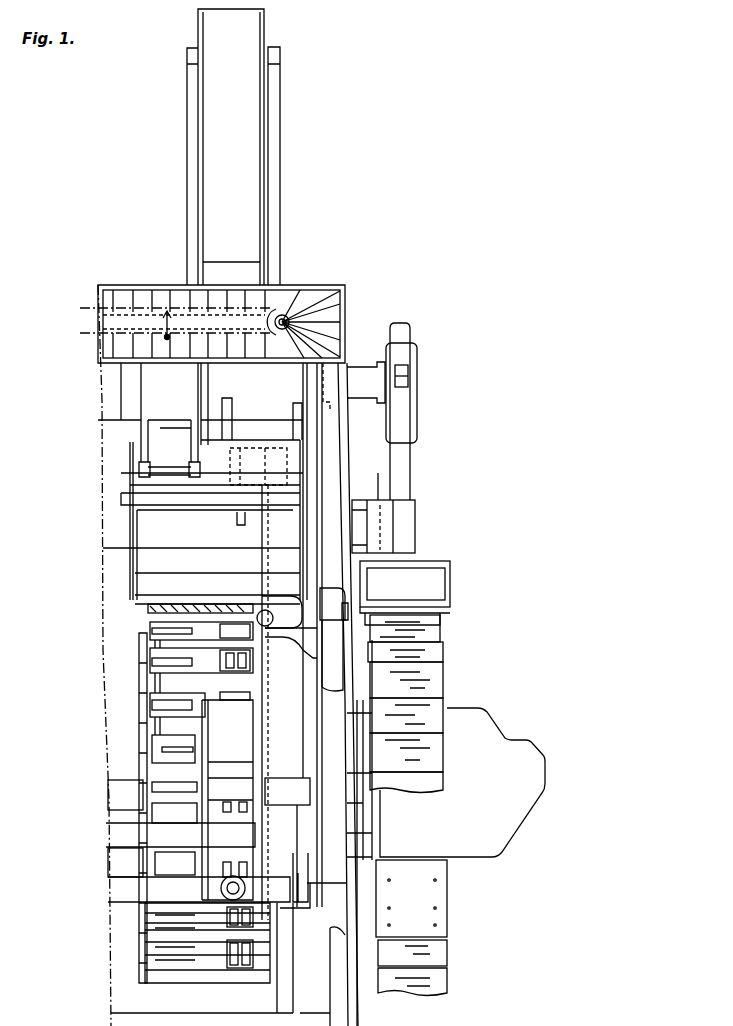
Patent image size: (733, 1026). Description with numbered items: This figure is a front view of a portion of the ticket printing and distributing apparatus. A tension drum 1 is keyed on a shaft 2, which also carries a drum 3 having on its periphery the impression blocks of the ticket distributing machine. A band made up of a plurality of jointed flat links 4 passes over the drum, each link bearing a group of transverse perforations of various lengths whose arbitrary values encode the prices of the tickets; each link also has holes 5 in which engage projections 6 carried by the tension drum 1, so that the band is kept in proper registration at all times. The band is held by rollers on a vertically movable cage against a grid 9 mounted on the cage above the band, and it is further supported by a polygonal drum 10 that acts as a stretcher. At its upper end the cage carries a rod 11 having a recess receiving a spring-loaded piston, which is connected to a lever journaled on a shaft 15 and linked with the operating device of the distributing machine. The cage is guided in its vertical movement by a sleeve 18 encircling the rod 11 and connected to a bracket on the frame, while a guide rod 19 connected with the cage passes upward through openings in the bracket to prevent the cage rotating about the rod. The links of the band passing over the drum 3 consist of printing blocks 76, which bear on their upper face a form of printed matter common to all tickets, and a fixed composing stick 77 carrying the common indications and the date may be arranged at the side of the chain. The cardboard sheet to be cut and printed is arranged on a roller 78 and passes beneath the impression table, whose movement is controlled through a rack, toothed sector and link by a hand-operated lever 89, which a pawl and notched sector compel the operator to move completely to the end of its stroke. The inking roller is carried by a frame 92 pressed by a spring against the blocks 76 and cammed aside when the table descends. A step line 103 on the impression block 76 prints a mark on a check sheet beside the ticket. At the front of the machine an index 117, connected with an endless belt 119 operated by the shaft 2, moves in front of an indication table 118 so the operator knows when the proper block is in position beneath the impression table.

The tension drum 1 is at (411, 898).
The shaft 2 is at (287, 842).
The drum 3 is at (200, 752).
The flat links 4 is at (433, 652).
The holes 5 is at (435, 948).
The projections 6 is at (433, 880).
The grid 9 is at (366, 600).
The polygonal drum 10 is at (447, 678).
The rod 11 is at (401, 411).
The shaft 15 is at (366, 382).
The sleeve 18 is at (384, 526).
The guide rod 19 is at (378, 473).
The printing blocks 76 is at (153, 695).
The composing stick 77 is at (268, 634).
The roller 78 is at (233, 147).
The lever 89 is at (320, 694).
The frame 92 is at (145, 583).
The step line 103 is at (162, 750).
The index 117 is at (187, 325).
The indication table 118 is at (160, 300).
The endless belt 119 is at (290, 312).